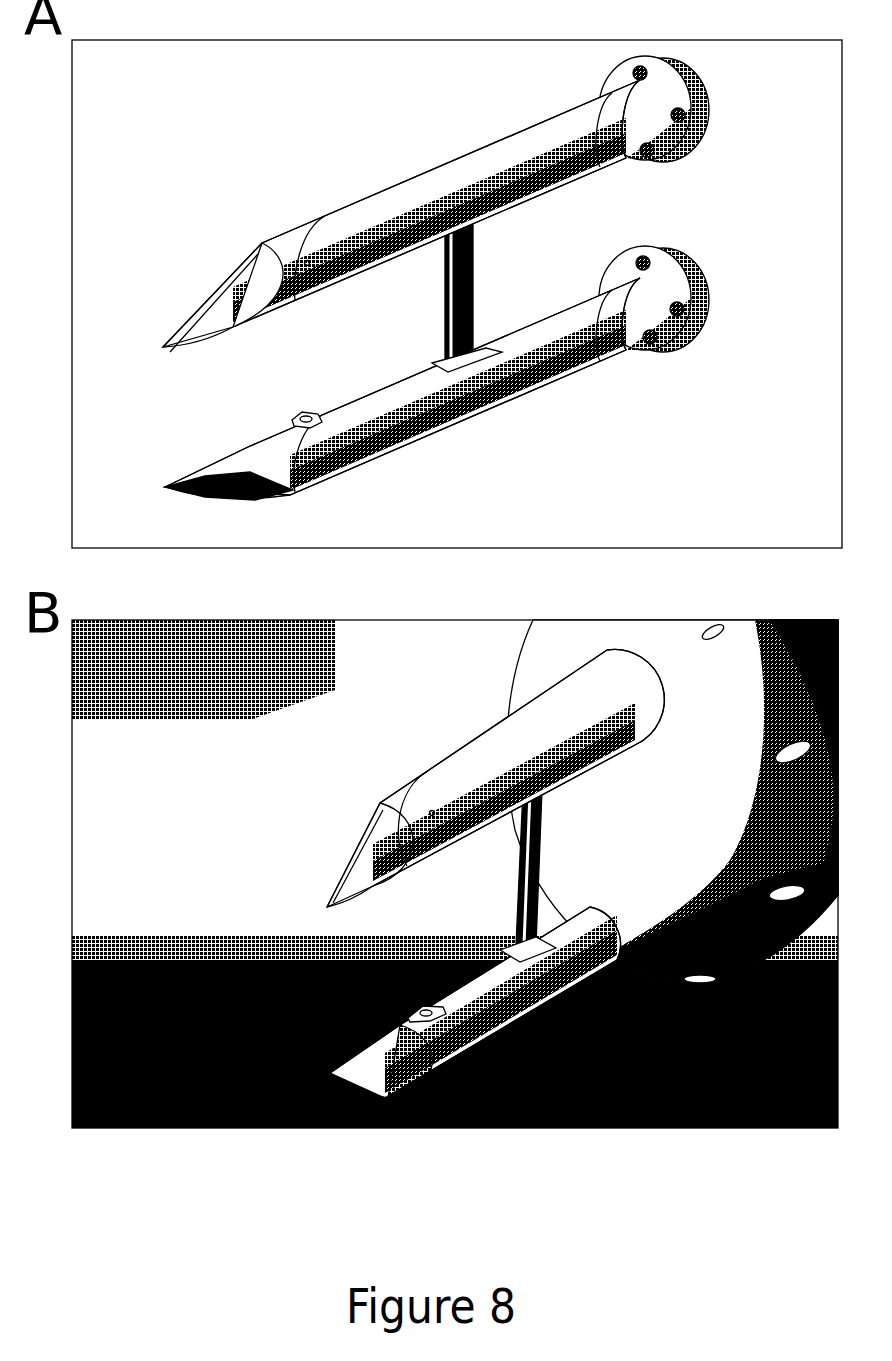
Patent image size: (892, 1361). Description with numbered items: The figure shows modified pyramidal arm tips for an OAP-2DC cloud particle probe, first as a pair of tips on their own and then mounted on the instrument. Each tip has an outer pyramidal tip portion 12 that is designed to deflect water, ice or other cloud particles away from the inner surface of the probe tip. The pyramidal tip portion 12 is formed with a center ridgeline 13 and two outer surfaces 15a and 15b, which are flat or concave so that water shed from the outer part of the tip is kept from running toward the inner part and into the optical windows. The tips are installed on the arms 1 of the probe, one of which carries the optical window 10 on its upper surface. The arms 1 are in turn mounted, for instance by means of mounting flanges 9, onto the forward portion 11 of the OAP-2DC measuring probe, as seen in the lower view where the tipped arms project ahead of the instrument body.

The arm 1 is at (424, 186).
The mounting flange 9 is at (670, 338).
The optical window 10 is at (306, 414).
The forward portion 11 is at (706, 848).
The pyramidal tip portion 12 is at (222, 338).
The center ridgeline 13 is at (192, 312).
The outer surface 15a is at (222, 275).
The outer surface 15b is at (247, 287).